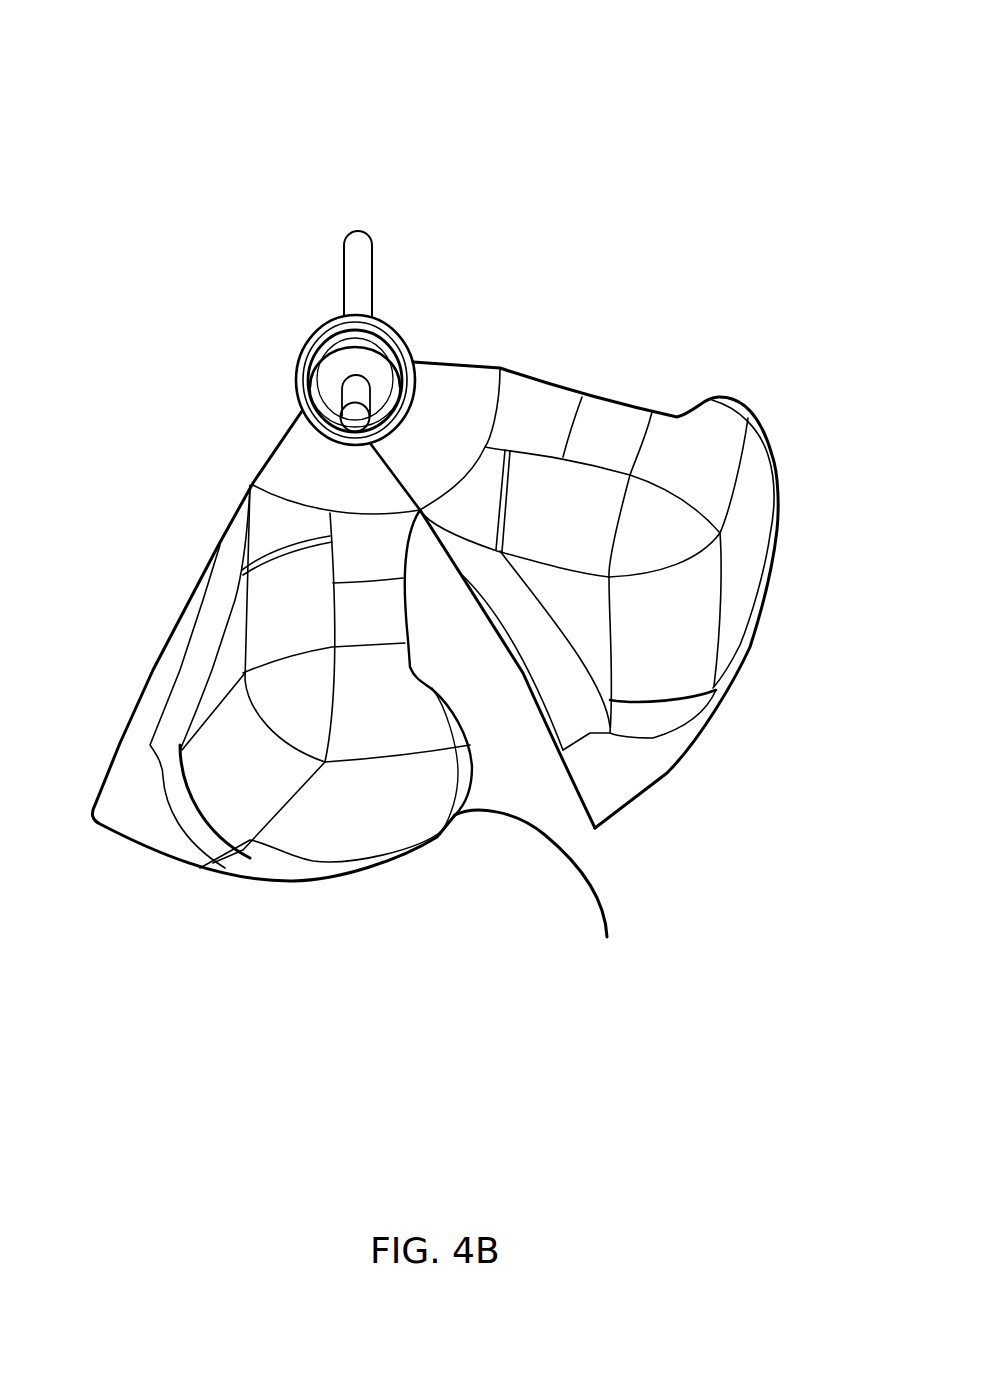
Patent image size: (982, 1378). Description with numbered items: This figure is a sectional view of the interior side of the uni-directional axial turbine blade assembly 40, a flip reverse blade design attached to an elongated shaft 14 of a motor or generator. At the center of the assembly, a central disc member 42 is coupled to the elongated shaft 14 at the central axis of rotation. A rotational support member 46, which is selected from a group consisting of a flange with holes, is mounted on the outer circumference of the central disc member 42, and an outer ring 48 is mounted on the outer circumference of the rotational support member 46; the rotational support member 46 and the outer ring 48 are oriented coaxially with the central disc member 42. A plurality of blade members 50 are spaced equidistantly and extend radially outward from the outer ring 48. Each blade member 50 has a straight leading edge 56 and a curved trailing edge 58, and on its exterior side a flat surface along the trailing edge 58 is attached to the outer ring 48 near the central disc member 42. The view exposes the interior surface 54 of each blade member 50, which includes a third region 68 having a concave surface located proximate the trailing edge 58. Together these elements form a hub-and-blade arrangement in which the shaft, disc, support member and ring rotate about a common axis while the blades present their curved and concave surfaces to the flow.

The uni-directional axial turbine blade assembly 40 is at (472, 67).
The elongated shaft 14 is at (345, 262).
The rotational support member 46 is at (318, 365).
The central disc member 42 is at (330, 390).
The outer ring 48 is at (297, 395).
The trailing edge 58 is at (628, 402).
The leading edge 56 is at (200, 573).
The blade member 50 is at (648, 785).
The interior surface 54 is at (242, 806).
The third region 68 is at (329, 803).